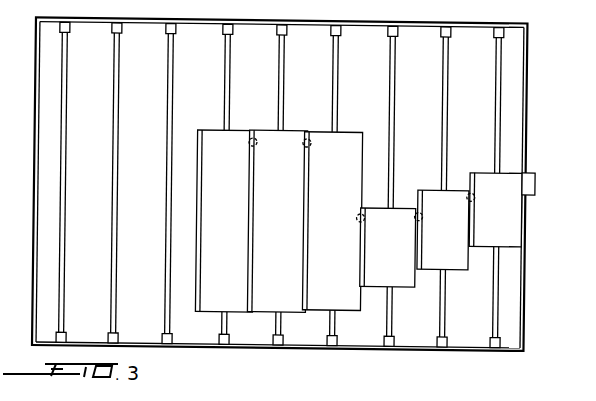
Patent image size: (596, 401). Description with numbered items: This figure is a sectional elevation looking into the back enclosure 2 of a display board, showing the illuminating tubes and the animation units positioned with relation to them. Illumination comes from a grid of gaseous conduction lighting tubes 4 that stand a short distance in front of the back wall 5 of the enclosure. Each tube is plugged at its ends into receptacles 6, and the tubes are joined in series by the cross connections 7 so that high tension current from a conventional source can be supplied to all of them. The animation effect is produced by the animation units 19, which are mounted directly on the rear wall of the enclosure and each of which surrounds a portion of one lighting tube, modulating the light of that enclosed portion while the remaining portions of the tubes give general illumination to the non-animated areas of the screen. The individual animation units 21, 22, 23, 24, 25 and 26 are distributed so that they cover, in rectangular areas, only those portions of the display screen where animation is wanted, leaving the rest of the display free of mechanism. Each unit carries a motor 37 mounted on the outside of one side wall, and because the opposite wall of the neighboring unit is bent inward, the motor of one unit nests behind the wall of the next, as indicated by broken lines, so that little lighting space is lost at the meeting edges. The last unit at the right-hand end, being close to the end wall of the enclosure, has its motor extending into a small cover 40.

The back enclosure 2 is at (527, 82).
The gaseous conduction lighting tubes 4 is at (115, 79).
The back wall 5 is at (280, 185).
The receptacles 6 is at (166, 26).
The cross connections 7 is at (211, 23).
The animation units 19 is at (277, 240).
The animation unit 21 is at (212, 132).
The animation unit 22 is at (267, 130).
The animation unit 23 is at (320, 135).
The animation unit 24 is at (380, 214).
The animation unit 25 is at (438, 257).
The animation unit 26 is at (516, 228).
The motor 37 is at (308, 140).
The small cover 40 is at (535, 169).